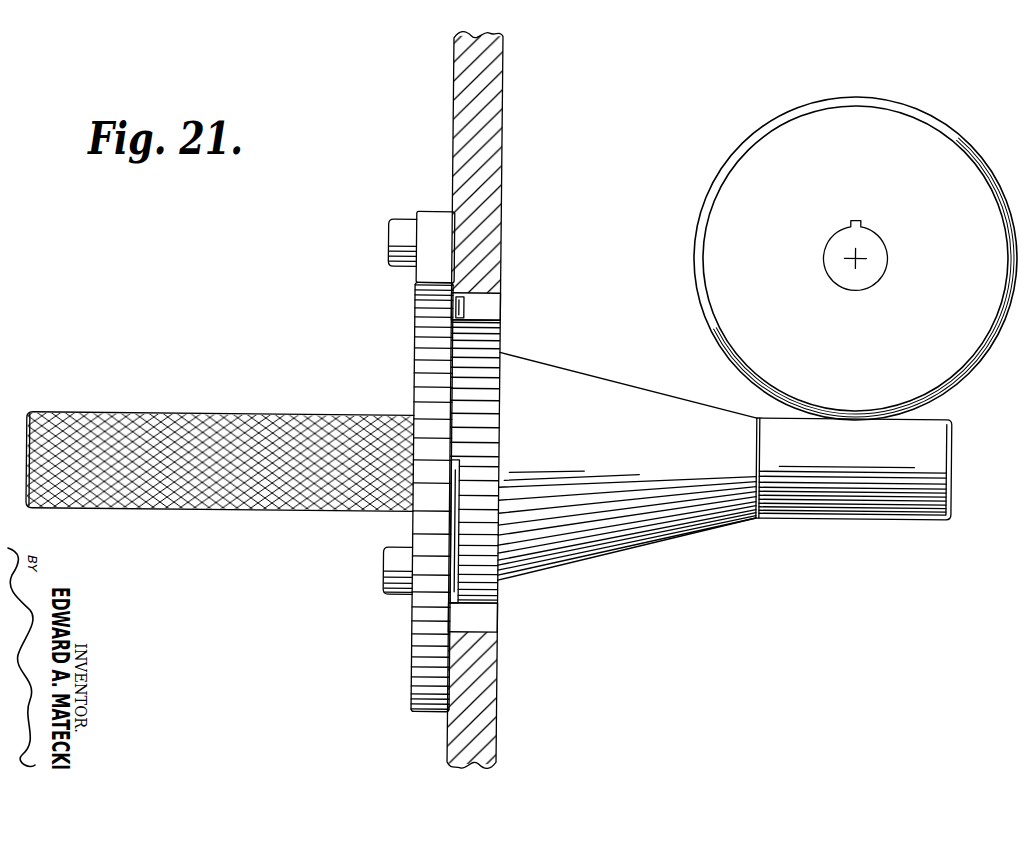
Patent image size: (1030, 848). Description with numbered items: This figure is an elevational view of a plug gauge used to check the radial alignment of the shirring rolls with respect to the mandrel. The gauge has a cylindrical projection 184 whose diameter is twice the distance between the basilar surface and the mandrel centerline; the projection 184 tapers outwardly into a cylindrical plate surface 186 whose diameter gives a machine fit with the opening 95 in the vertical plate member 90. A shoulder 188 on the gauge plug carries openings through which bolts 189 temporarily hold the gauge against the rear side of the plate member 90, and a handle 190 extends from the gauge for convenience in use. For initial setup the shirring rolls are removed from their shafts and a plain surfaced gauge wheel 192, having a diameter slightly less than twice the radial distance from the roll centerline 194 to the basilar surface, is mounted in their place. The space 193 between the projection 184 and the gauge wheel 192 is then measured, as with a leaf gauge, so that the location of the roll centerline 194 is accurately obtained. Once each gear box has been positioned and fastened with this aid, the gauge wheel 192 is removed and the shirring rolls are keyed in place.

The vertical plate member 90 is at (478, 682).
The opening 95 is at (480, 622).
The cylindrical projection 184 is at (930, 445).
The cylindrical plate surface 186 is at (483, 362).
The shoulder 188 is at (427, 660).
The bolts 189 is at (405, 241).
The handle 190 is at (273, 435).
The gauge wheel 192 is at (745, 323).
The space 193 is at (850, 418).
The centerline 194 is at (860, 253).